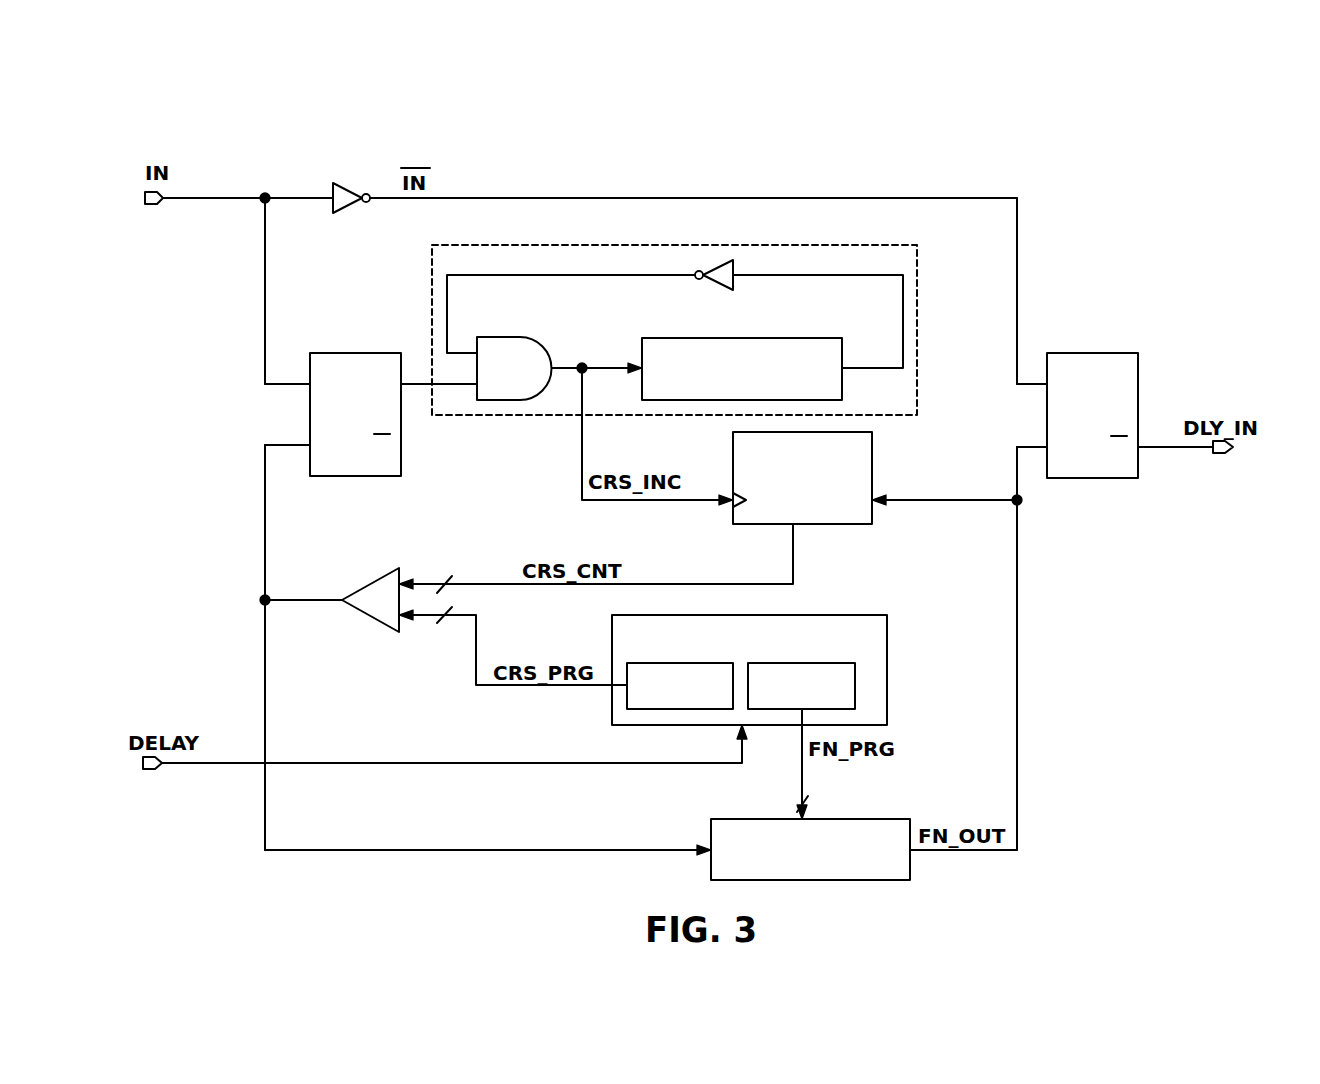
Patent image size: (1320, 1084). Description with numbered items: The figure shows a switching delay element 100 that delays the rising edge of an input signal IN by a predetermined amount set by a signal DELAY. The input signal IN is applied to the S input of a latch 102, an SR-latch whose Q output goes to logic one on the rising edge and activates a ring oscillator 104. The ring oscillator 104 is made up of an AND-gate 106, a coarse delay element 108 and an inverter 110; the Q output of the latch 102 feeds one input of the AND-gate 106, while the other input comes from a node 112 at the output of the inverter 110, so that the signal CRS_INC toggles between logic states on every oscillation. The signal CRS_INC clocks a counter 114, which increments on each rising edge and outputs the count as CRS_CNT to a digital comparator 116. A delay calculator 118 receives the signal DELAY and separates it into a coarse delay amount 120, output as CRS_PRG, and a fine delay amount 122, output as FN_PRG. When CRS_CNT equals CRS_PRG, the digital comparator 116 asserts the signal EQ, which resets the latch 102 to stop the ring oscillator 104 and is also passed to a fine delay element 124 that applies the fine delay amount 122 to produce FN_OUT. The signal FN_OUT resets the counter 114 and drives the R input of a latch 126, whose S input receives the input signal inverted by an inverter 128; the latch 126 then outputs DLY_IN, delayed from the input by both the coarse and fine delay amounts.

The switching delay element 100 is at (235, 158).
The latch 102 is at (346, 352).
The ring oscillator 104 is at (820, 243).
The AND-gate 106 is at (553, 343).
The coarse delay element 108 is at (780, 338).
The inverter 110 is at (699, 292).
The node 112 is at (468, 296).
The counter 114 is at (873, 447).
The digital comparator 116 is at (363, 620).
The delay calculator 118 is at (771, 675).
The coarse delay amount 120 is at (672, 709).
The fine delay amount 122 is at (855, 681).
The fine delay element 124 is at (890, 819).
The latch 126 is at (1108, 353).
The inverter 128 is at (338, 212).